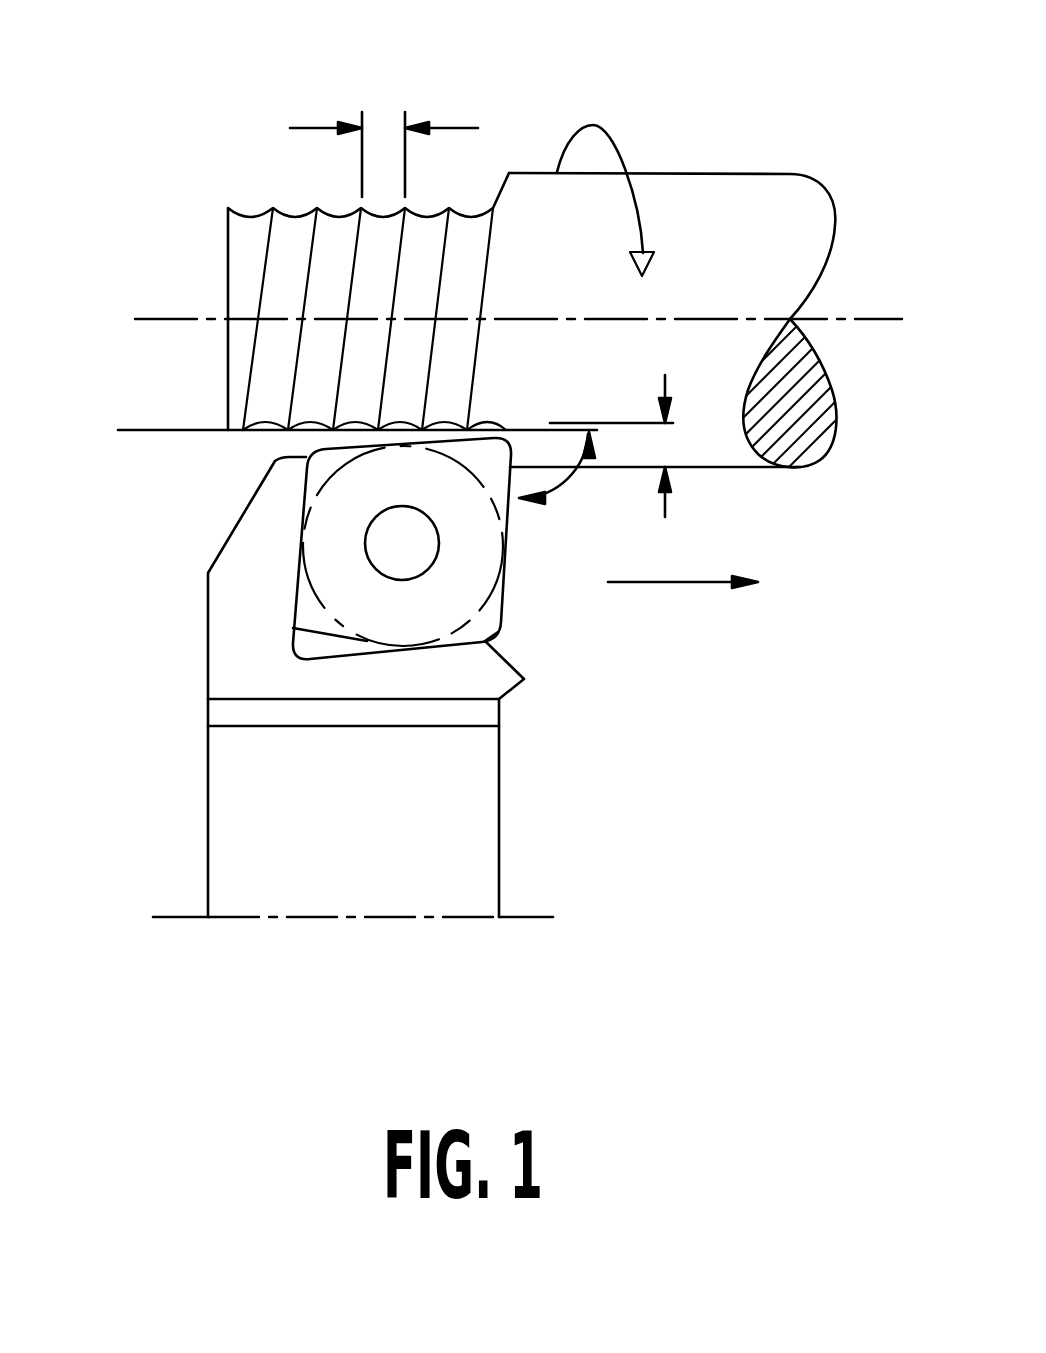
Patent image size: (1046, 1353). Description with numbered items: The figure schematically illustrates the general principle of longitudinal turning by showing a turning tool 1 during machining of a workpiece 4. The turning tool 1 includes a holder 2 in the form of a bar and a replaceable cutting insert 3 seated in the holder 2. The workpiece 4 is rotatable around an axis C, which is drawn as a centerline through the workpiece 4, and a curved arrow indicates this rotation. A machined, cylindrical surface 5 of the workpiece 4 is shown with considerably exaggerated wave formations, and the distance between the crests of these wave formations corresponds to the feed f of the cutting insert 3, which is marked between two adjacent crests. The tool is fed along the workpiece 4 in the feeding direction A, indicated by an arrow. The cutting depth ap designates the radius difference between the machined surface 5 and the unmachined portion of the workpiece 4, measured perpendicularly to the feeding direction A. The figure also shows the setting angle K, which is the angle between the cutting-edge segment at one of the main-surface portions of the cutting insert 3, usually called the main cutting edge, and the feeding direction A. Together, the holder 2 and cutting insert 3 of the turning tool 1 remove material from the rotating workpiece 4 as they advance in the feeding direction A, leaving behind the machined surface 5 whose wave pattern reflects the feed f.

The turning tool 1 is at (176, 657).
The holder 2 is at (225, 810).
The cutting insert 3 is at (497, 611).
The workpiece 4 is at (711, 148).
The machined cylindrical surface 5 is at (275, 205).
The feeding direction A is at (673, 584).
The axis C is at (518, 287).
The feed f is at (384, 135).
The setting angle K is at (562, 485).
The cutting depth ap is at (646, 457).